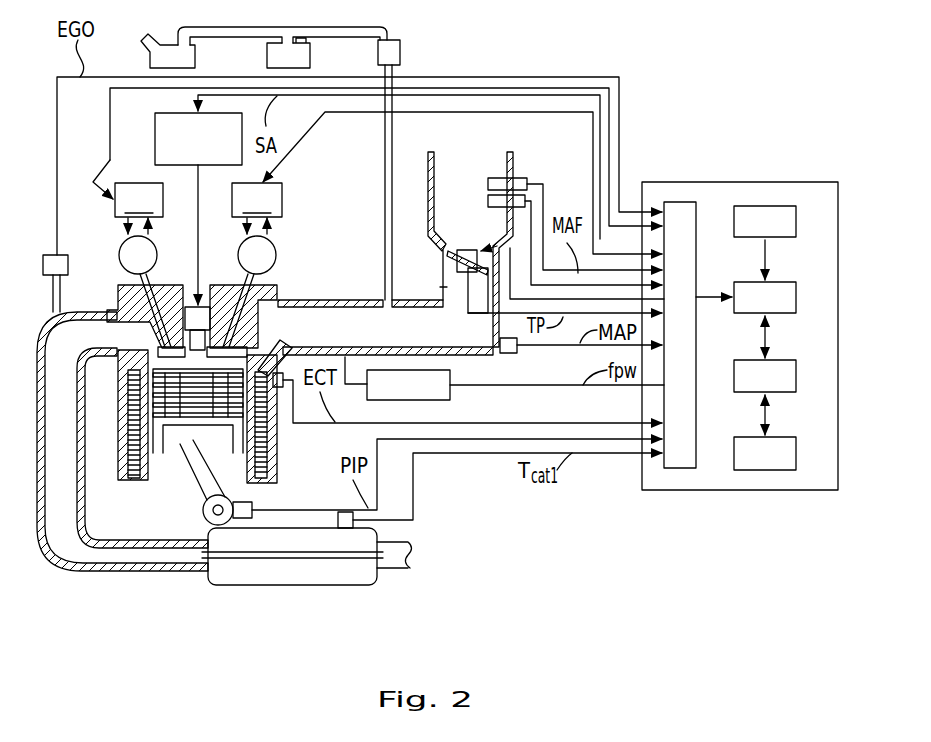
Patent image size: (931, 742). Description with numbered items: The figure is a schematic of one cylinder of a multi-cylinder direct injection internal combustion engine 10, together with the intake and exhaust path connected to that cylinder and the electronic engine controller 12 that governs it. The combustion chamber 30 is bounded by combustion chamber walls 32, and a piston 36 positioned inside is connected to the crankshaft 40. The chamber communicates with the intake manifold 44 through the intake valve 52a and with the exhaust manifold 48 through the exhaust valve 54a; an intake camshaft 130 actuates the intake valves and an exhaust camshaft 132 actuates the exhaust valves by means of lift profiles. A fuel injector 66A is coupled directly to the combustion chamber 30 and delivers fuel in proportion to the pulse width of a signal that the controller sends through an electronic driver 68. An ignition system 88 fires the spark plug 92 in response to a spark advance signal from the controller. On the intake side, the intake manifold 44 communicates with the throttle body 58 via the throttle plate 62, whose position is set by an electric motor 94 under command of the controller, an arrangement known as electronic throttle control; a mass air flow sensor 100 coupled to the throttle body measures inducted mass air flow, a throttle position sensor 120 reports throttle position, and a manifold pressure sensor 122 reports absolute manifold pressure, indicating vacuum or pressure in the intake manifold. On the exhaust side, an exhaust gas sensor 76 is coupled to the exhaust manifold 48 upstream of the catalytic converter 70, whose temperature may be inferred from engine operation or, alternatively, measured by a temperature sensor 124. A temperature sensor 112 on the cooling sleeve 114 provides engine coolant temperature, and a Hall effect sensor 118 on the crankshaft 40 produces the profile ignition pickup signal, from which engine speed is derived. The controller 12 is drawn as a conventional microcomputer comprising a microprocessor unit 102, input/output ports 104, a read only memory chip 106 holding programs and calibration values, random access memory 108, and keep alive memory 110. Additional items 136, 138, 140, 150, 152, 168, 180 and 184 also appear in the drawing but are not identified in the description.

The direct injection internal combustion engine 10 is at (287, 241).
The electronic engine controller 12 is at (740, 182).
The combustion chamber 30 is at (127, 410).
The combustion chamber walls 32 is at (143, 482).
The piston 36 is at (186, 446).
The crankshaft 40 is at (203, 512).
The intake manifold 44 is at (430, 342).
The exhaust manifold 48 is at (58, 360).
The intake valve 52a is at (226, 290).
The exhaust valve 54a is at (157, 347).
The throttle body 58 is at (443, 290).
The throttle plate 62 is at (432, 217).
The fuel injector 66A is at (272, 340).
The electronic driver 68 is at (450, 398).
The catalytic converter 70 is at (280, 523).
The exhaust gas sensor 76 is at (48, 252).
The ignition system 88 is at (176, 113).
The spark plug 92 is at (181, 292).
The electric motor 94 is at (480, 248).
The mass air flow sensor 100 is at (530, 182).
The microprocessor unit 102 is at (796, 297).
The input/output ports 104 is at (697, 242).
The read only memory chip 106 is at (796, 222).
The random access memory 108 is at (796, 375).
The keep alive memory 110 is at (796, 455).
The temperature sensor 112 is at (283, 373).
The cooling sleeve 114 is at (277, 443).
The Hall effect sensor 118 is at (252, 503).
The throttle position sensor 120 is at (455, 256).
The manifold pressure sensor 122 is at (517, 352).
The temperature sensor 124 is at (343, 523).
The intake camshaft 130 is at (277, 257).
The exhaust camshaft 132 is at (120, 250).
The intake cam actuator 136 is at (257, 208).
The exhaust cam actuator 138 is at (139, 208).
The throttle actuator 140 is at (488, 190).
The cam timing signal line 150 is at (305, 145).
The cam timing signal line 152 is at (110, 122).
The purge valve 168 is at (402, 52).
The fuel tank 180 is at (196, 59).
The fuel vapor canister 184 is at (312, 58).